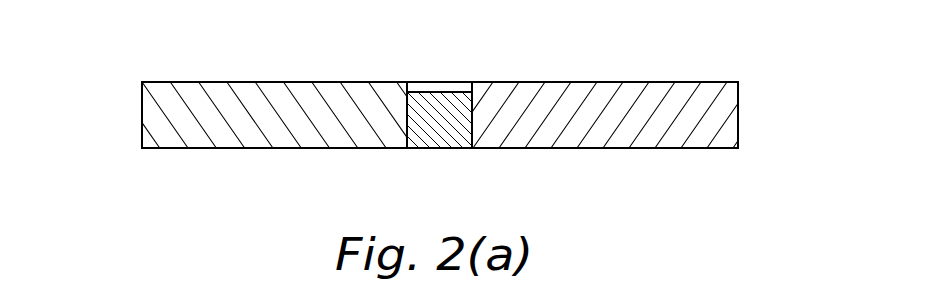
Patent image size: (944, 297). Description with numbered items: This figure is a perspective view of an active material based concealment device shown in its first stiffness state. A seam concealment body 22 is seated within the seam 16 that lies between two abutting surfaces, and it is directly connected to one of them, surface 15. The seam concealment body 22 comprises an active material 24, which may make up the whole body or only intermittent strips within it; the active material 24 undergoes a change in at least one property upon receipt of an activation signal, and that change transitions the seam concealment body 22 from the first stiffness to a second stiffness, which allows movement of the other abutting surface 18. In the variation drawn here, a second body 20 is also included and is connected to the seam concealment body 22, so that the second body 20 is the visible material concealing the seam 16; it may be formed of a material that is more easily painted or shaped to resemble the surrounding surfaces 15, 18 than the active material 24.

The surface 15 is at (720, 115).
The seam 16 is at (462, 170).
The surface 18 is at (167, 117).
The second body 20 is at (437, 82).
The seam concealment body 22 is at (322, 58).
The active material 24 is at (442, 126).